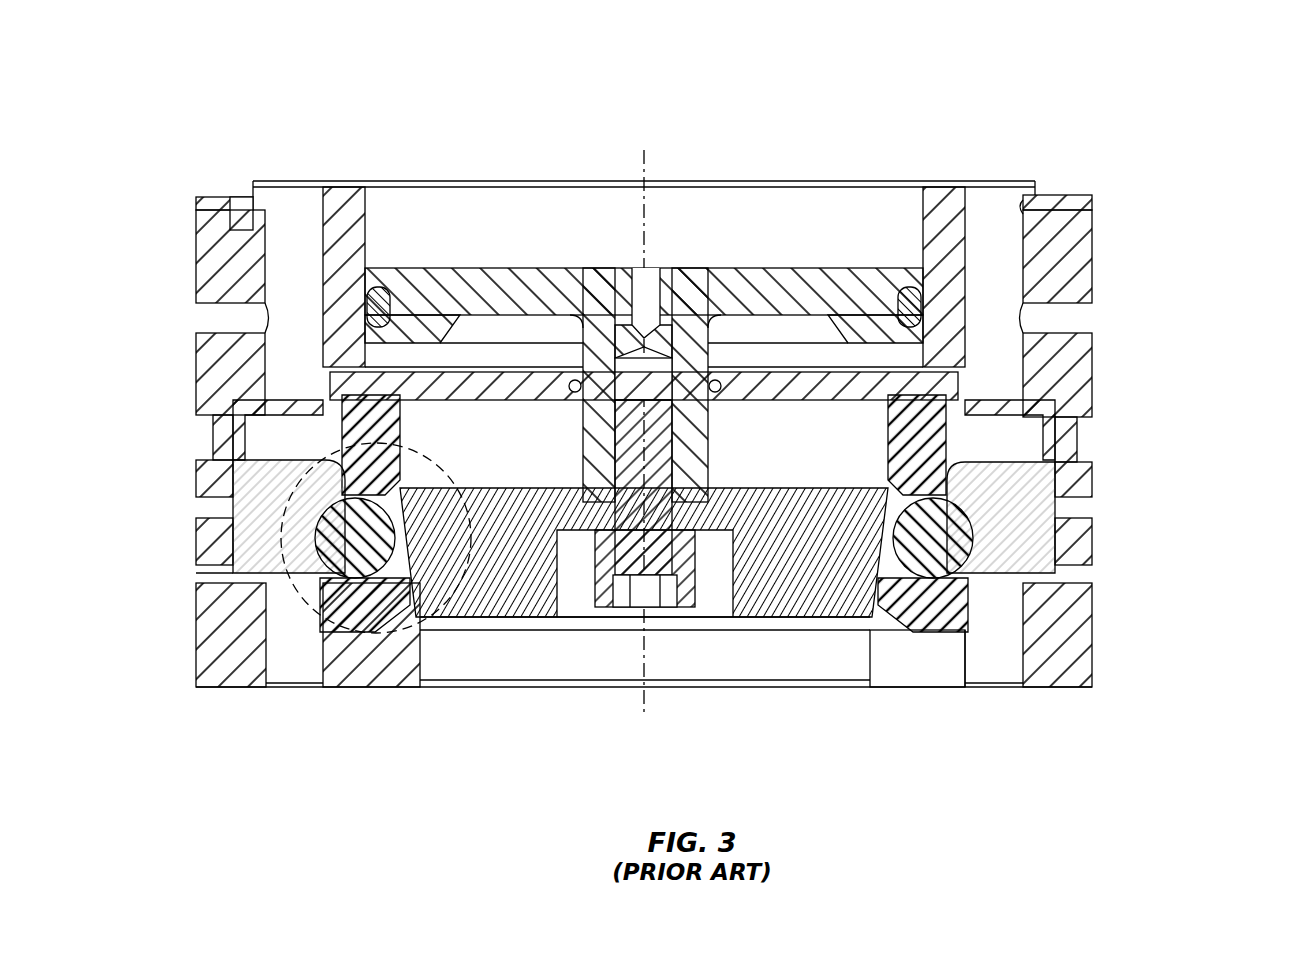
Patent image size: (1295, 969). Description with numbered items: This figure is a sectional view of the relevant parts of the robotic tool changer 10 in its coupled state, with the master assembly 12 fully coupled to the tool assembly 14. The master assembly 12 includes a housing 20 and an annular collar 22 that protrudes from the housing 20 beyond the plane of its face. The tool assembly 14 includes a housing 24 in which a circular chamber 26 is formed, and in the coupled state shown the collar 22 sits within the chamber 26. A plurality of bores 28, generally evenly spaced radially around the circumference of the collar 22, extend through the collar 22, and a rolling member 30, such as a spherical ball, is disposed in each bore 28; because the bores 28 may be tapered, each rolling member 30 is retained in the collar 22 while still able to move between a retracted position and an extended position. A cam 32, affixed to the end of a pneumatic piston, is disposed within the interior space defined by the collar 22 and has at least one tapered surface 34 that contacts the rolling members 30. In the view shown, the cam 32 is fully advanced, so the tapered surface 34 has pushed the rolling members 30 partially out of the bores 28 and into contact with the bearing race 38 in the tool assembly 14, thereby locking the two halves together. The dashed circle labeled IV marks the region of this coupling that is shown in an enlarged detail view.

The robotic tool changer 10 is at (910, 77).
The master assembly 12 is at (1150, 289).
The tool assembly 14 is at (1150, 654).
The housing 20 is at (1060, 443).
The annular collar 22 is at (947, 433).
The housing 24 is at (1082, 480).
The circular chamber 26 is at (537, 656).
The bores 28 is at (958, 590).
The rolling member 30 is at (347, 545).
The cam 32 is at (820, 588).
The tapered surface 34 is at (425, 605).
The bearing race 38 is at (257, 518).
The detail view circle IV is at (311, 610).